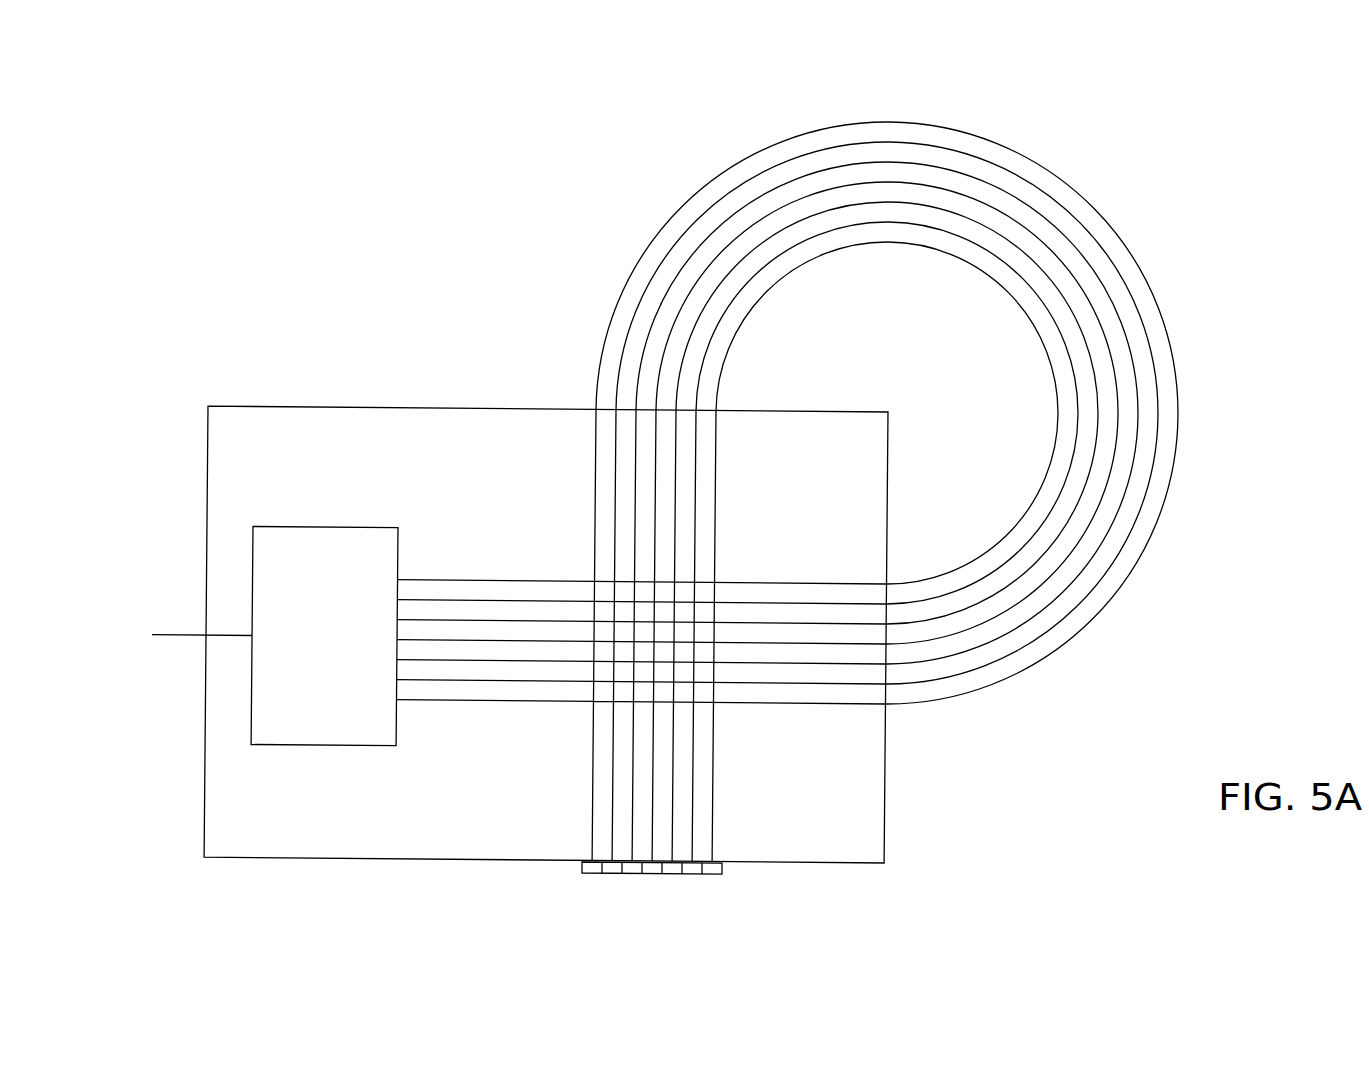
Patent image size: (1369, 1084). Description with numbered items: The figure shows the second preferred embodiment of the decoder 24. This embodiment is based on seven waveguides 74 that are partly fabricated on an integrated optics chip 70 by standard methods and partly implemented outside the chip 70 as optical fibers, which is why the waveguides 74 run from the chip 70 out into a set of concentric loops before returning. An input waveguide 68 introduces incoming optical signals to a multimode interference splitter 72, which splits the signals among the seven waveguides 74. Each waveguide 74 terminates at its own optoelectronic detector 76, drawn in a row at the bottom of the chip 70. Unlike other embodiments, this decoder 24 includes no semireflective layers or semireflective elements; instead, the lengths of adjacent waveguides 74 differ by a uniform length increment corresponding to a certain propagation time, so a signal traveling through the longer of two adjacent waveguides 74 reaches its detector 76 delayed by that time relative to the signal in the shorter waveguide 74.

The decoder 24 is at (852, 472).
The input waveguide 68 is at (179, 598).
The integrated optics chip 70 is at (303, 485).
The multimode interference splitter 72 is at (315, 653).
The waveguides 74 is at (977, 136).
The optoelectronic detector 76 is at (587, 880).